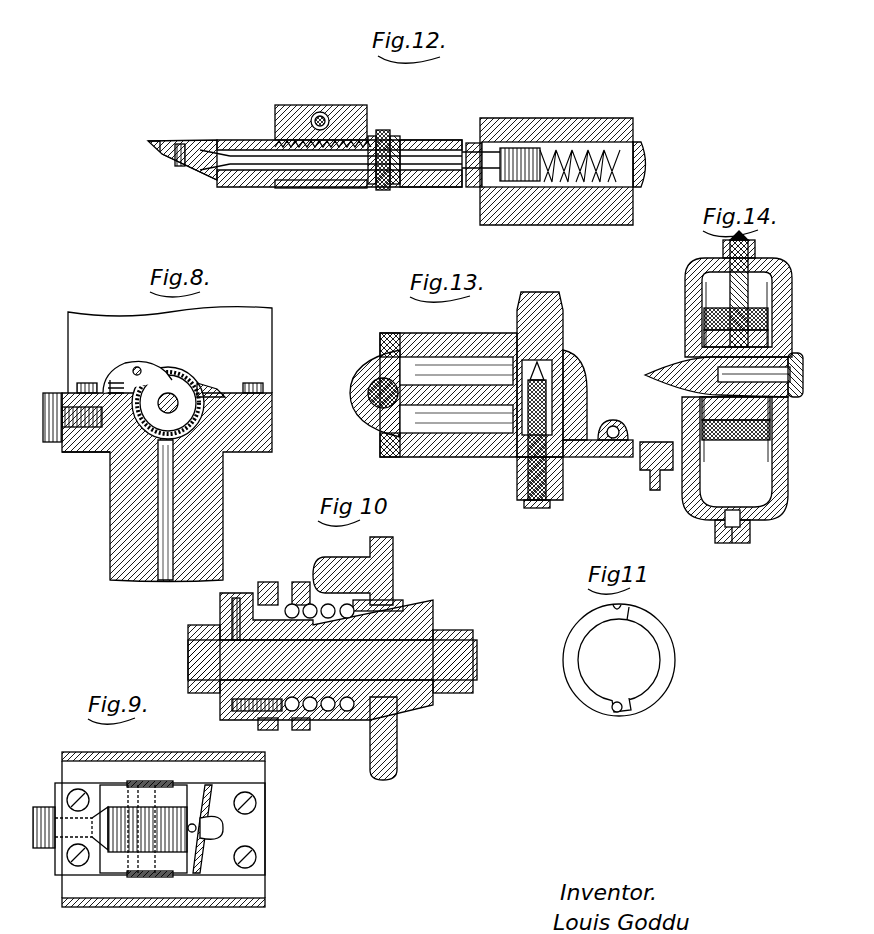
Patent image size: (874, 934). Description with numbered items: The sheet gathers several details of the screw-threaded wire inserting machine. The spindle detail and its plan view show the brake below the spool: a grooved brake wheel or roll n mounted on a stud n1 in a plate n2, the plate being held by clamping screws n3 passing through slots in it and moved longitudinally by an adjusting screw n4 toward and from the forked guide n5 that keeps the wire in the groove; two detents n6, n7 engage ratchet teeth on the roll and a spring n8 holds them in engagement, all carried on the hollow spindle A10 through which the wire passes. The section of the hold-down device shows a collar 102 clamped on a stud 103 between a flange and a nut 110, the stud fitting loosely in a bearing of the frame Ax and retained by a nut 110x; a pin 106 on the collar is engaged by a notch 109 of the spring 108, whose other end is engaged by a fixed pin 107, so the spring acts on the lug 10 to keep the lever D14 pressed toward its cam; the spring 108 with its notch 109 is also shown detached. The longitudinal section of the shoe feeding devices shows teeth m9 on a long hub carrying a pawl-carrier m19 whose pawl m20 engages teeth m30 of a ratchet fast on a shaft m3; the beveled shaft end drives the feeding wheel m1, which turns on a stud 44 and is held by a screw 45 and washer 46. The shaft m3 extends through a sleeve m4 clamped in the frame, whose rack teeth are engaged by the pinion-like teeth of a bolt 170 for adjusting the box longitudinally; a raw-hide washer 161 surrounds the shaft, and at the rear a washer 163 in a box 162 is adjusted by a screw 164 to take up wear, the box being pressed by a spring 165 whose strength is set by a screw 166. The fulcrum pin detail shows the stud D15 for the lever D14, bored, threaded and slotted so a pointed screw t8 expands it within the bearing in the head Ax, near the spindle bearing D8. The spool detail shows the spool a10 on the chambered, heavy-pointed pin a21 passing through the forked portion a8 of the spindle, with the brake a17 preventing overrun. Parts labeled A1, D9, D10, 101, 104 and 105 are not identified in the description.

In FIG. 12, the washer 46 is at (152, 140).
In FIG. 12, the screw 45 is at (180, 143).
In FIG. 12, the stud 44 is at (185, 165).
In FIG. 12, the feeding wheel m1 is at (150, 150).
In FIG. 12, the shaft m3 is at (248, 139).
In FIG. 12, the sleeve or box m4 is at (248, 187).
In FIG. 12, the tube section A1 is at (304, 209).
In FIG. 12, the bolt 170 is at (320, 112).
In FIG. 12, the raw-hide washer 161 is at (372, 135).
In FIG. 12, the pawl m20 is at (385, 130).
In FIG. 12, the pawl-carrier m19 is at (402, 138).
In FIG. 12, the ratchet teeth m30 is at (380, 188).
In FIG. 12, the hub teeth m9 is at (428, 187).
In FIG. 12, the sleeve or box 162 is at (470, 188).
In FIG. 12, the washer 163 is at (498, 141).
In FIG. 12, the screw 164 is at (522, 147).
In FIG. 12, the spring 165 is at (560, 147).
In FIG. 12, the screw 166 is at (642, 142).
In FIG. 12, the frame or head Ax is at (660, 204).
In FIG. 13, the frame or head Ax is at (586, 384).
In FIG. 10, the frame or head Ax is at (428, 562).
In FIG. 8, the adjusting screw n4 is at (48, 392).
In FIG. 9, the adjusting screw n4 is at (50, 847).
In FIG. 8, the clamping screws n3 is at (85, 382).
In FIG. 9, the clamping screws n3 is at (80, 790).
In FIG. 8, the spring n8 is at (113, 382).
In FIG. 8, the detent n7 is at (150, 360).
In FIG. 9, the detent n7 is at (118, 812).
In FIG. 8, the stud n1 is at (172, 392).
In FIG. 9, the stud n1 is at (151, 820).
In FIG. 8, the guide n5 is at (210, 385).
In FIG. 9, the guide n5 is at (222, 826).
In FIG. 8, the plate n2 is at (72, 448).
In FIG. 9, the plate n2 is at (100, 860).
In FIG. 8, the brake wheel or roll n is at (150, 410).
In FIG. 8, the hollow spindle A10 is at (215, 512).
In FIG. 13, the hollow spindle A10 is at (352, 405).
In FIG. 13, the end plate D10 is at (390, 335).
In FIG. 13, the cylinder body D9 is at (410, 337).
In FIG. 13, the bearing D8 is at (352, 377).
In FIG. 13, the stud D15 is at (560, 300).
In FIG. 13, the lever D14 is at (578, 358).
In FIG. 13, the lug 10 is at (615, 424).
In FIG. 13, the pointed screw t8 is at (537, 445).
In FIG. 14, the brake a17 is at (750, 292).
In FIG. 14, the spool a10 is at (774, 292).
In FIG. 14, the forked or bifurcated portion a8 is at (790, 298).
In FIG. 14, the stud or pin a21 is at (800, 362).
In FIG. 10, the bolt 104 is at (268, 581).
In FIG. 10, the bolt 105 is at (302, 581).
In FIG. 10, the fixed pin 107 is at (382, 565).
In FIG. 10, the spring 108 is at (352, 602).
In FIG. 11, the spring 108 is at (657, 628).
In FIG. 10, the collar 102 is at (220, 603).
In FIG. 10, the nut 110 is at (188, 631).
In FIG. 10, the stud 103 is at (435, 630).
In FIG. 10, the nut 110x is at (477, 612).
In FIG. 10, the pin or projection 106 is at (220, 706).
In FIG. 10, the shaft 101 is at (280, 722).
In FIG. 11, the notch 109 is at (616, 712).
In FIG. 9, the detent n6 is at (120, 855).